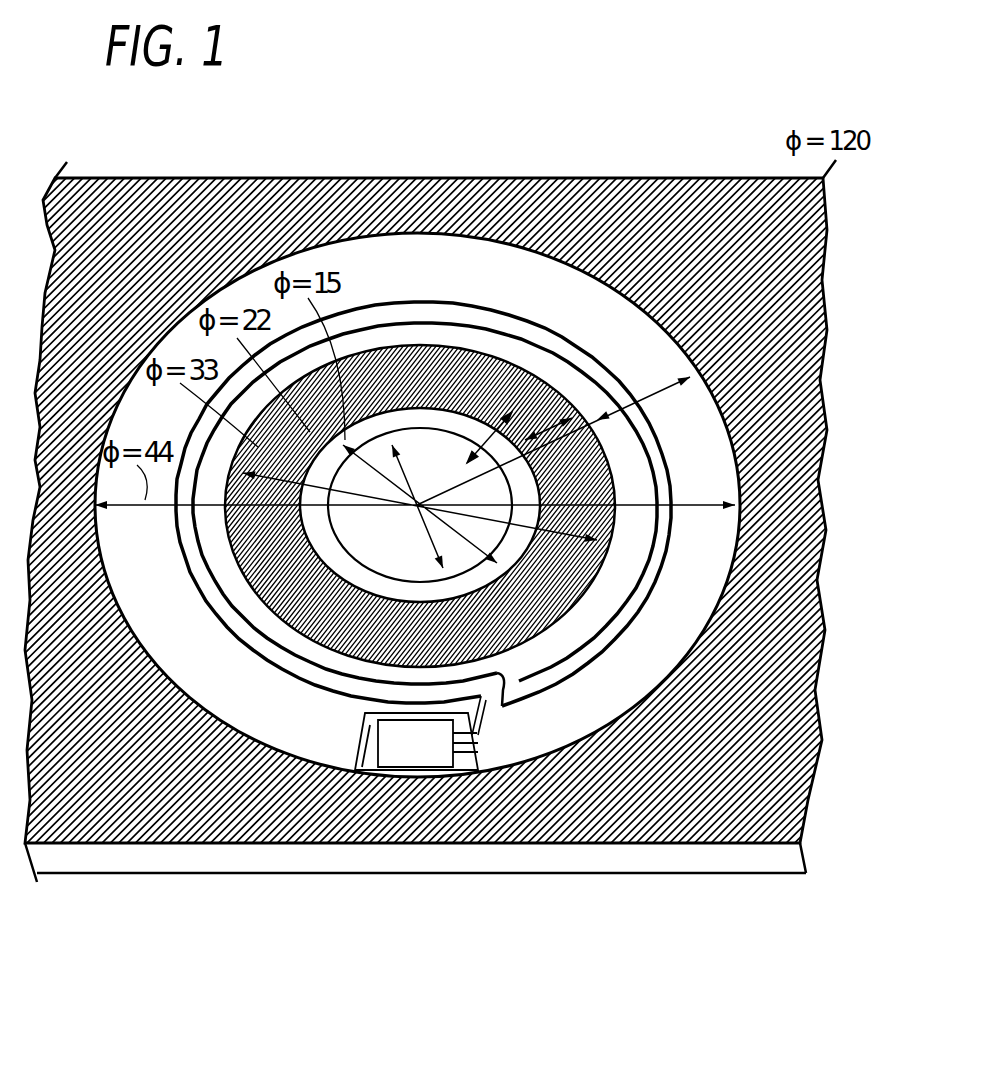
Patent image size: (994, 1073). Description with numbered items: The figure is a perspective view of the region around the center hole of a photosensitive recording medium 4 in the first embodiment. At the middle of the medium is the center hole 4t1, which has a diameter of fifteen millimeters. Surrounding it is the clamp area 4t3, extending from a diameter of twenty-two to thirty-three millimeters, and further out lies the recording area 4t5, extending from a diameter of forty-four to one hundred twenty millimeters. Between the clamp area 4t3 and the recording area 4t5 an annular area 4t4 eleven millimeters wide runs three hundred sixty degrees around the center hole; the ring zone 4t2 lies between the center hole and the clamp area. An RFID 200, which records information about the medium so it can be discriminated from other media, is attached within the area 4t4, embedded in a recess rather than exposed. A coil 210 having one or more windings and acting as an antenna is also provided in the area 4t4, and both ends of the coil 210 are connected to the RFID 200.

The photosensitive recording medium 4 is at (277, 845).
The center hole 4t1 is at (442, 435).
The region of disk with thickness t2 4t2 is at (485, 447).
The clamp area 4t3 is at (522, 447).
The area 4t4 is at (647, 390).
The recording area 4t5 is at (757, 320).
The RFID 200 is at (420, 737).
The coil 210 is at (573, 680).